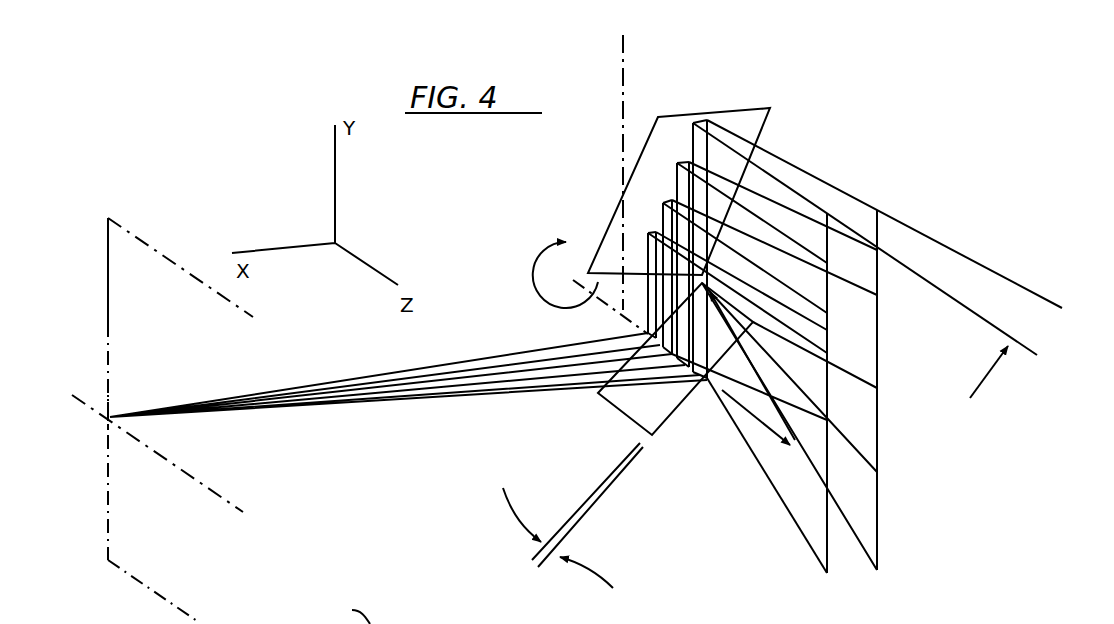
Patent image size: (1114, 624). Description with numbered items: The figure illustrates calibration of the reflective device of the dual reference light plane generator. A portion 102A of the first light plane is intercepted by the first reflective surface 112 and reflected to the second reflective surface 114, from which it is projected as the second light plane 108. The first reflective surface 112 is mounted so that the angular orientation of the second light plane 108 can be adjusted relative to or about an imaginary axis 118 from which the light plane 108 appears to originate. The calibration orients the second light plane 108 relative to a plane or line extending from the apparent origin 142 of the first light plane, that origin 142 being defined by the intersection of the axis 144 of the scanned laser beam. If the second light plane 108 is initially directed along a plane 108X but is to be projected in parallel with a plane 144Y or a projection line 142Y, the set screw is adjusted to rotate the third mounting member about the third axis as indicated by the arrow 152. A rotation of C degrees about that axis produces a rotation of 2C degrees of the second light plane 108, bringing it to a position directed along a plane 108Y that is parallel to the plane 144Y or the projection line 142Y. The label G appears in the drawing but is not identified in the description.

The second light plane 108 is at (855, 336).
The plane 108X is at (806, 535).
The plane 108Y is at (880, 515).
The first reflective surface 112 is at (623, 407).
The second reflective surface 114 is at (743, 117).
The imaginary axis 118 is at (623, 67).
The arrow 152 is at (546, 252).
The axis of the laser beam 144 is at (100, 332).
The plane 144Y is at (127, 247).
The apparent origin 142 is at (128, 380).
The projection line 142Y is at (203, 477).
The portion of the first light plane 102A is at (474, 400).
The rotation of 2C degrees 2C is at (1044, 285).
The rotation of C degrees C is at (573, 525).
The line G is at (350, 611).